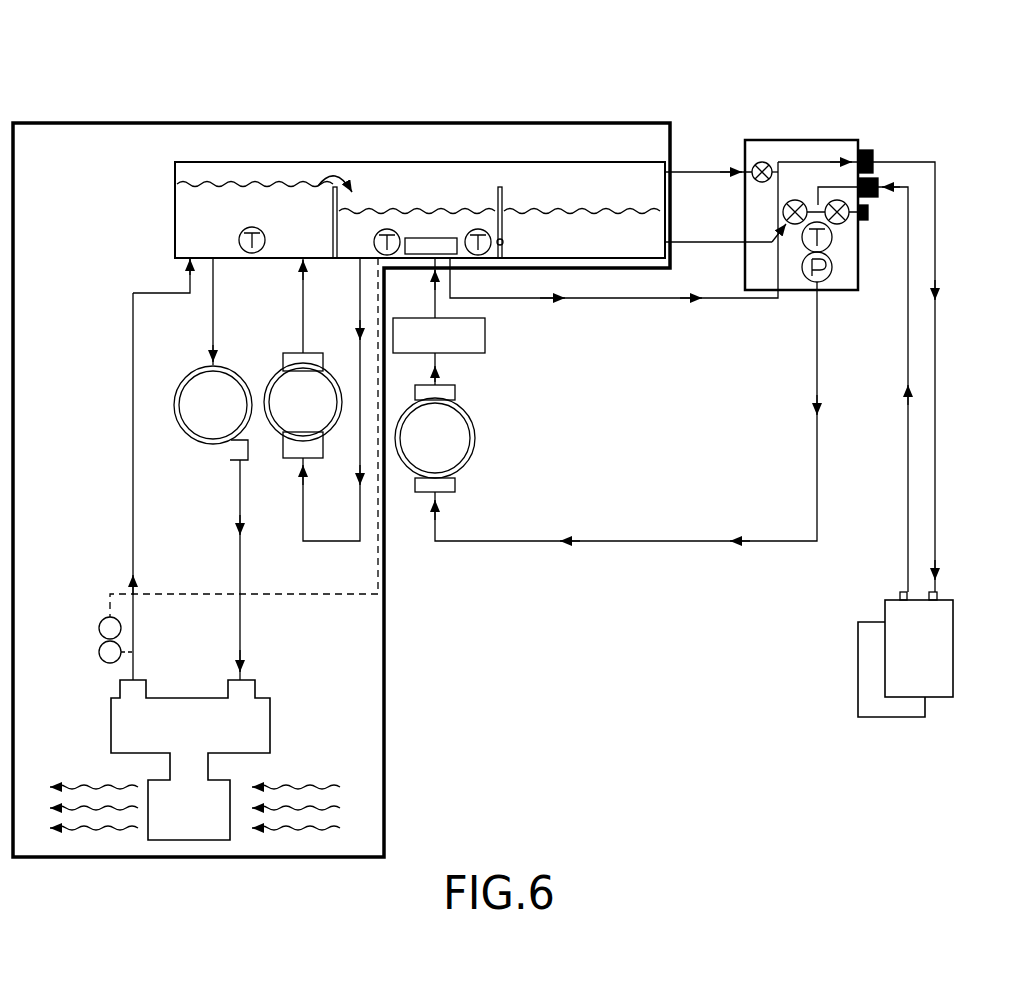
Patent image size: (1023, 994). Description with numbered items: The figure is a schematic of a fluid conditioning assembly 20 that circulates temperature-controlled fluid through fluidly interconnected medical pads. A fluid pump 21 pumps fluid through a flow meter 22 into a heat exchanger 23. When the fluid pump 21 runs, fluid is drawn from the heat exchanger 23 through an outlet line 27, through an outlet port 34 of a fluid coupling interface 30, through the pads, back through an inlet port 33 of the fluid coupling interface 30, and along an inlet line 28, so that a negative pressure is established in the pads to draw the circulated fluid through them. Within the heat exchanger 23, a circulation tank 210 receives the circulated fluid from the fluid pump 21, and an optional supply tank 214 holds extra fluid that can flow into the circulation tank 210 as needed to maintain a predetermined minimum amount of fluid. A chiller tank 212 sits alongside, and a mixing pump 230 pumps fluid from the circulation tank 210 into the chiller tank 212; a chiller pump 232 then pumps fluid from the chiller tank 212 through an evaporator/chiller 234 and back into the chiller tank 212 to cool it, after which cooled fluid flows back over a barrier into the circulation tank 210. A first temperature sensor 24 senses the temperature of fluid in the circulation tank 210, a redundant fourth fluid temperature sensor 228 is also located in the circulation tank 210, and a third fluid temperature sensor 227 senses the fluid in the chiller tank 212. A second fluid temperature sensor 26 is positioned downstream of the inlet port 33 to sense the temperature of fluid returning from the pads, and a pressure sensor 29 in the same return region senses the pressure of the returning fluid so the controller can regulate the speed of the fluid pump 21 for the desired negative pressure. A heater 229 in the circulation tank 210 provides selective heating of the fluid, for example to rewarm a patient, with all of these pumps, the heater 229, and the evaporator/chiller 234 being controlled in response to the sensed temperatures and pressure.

The fluid conditioning assembly 20 is at (642, 480).
The fluid pump 21 is at (432, 494).
The flow meter 22 is at (486, 336).
The heat exchanger 23 is at (303, 123).
The first temperature sensor 24 is at (383, 230).
The second fluid temperature sensor 26 is at (805, 200).
The outlet line 27 is at (665, 300).
The inlet line 28 is at (488, 542).
The pressure sensor 29 is at (832, 267).
The fluid coupling interface 30 is at (763, 146).
The inlet port 33 is at (879, 185).
The outlet port 34 is at (865, 150).
The circulation tank 210 is at (446, 178).
The chiller tank 212 is at (256, 170).
The supply tank 214 is at (600, 178).
The third fluid temperature sensor 227 is at (241, 230).
The fourth fluid temperature sensor 228 is at (478, 229).
The heater 229 is at (447, 237).
The mixing pump 230 is at (280, 447).
The chiller pump 232 is at (205, 447).
The evaporator/chiller 234 is at (271, 747).